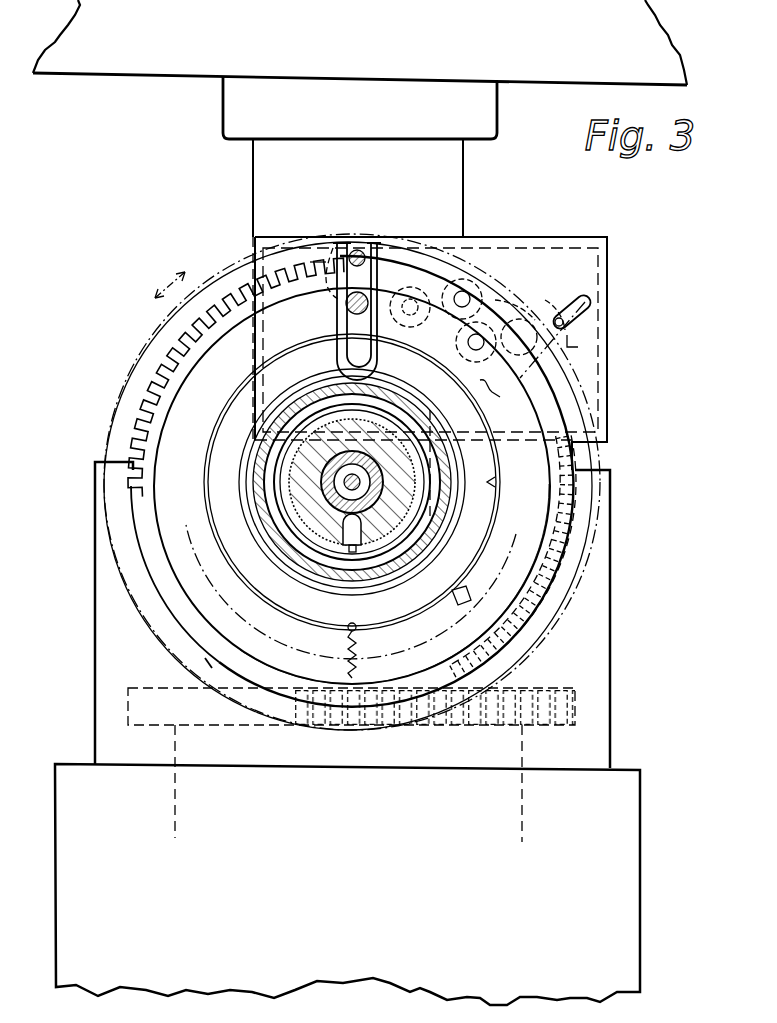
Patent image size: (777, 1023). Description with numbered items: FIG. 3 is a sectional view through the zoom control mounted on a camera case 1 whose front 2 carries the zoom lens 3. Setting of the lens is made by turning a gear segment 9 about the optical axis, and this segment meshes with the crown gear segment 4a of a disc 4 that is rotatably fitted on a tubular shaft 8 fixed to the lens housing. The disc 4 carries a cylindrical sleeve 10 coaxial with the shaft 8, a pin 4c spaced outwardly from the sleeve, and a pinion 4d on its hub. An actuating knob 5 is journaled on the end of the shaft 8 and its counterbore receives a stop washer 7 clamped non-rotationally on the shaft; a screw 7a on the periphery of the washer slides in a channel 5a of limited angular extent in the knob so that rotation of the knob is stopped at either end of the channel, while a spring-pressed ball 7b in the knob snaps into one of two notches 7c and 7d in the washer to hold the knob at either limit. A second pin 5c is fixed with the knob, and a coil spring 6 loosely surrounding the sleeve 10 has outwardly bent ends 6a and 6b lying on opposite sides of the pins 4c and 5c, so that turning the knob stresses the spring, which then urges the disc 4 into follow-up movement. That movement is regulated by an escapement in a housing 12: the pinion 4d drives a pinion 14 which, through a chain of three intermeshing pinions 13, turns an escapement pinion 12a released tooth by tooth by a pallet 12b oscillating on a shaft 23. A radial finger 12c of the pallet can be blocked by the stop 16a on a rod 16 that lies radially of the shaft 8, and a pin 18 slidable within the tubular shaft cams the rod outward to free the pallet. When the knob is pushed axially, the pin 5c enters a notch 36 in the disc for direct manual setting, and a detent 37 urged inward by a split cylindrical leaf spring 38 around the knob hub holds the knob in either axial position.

The camera case 1 is at (163, 48).
The front 2 is at (103, 78).
The zoom lens 3 is at (118, 630).
The disc 4 is at (175, 597).
The crown gear segment 4a is at (480, 692).
The pin 4c is at (318, 262).
The pinion 4d is at (265, 456).
The actuating knob 5 is at (118, 568).
The channel 5a is at (490, 632).
The second pin 5c is at (357, 262).
The coil spring 6 is at (240, 495).
The spring end 6a is at (345, 300).
The spring end 6b is at (363, 300).
The stop washer 7 is at (213, 518).
The screw 7a is at (500, 606).
The ball 7b is at (427, 650).
The notch 7c is at (495, 482).
The notch 7d is at (355, 630).
The tubular shaft 8 is at (330, 480).
The gear segment 9 is at (575, 712).
The cylindrical sleeve 10 is at (440, 455).
The housing 12 is at (595, 355).
The pinion 12a is at (514, 300).
The pallet 12b is at (562, 300).
The radial finger 12c is at (583, 338).
The intermeshing pinions 13 is at (474, 335).
The pinion 14 is at (240, 300).
The rod 16 is at (487, 383).
The stop 16a is at (590, 304).
The pin 18 is at (375, 512).
The shaft 23 is at (521, 332).
The notch 36 is at (152, 372).
The detent 37 is at (400, 545).
The split cylindrical leaf spring 38 is at (320, 530).